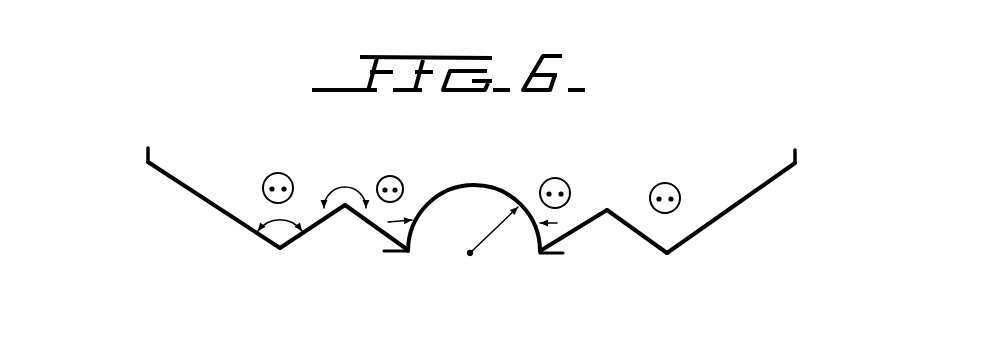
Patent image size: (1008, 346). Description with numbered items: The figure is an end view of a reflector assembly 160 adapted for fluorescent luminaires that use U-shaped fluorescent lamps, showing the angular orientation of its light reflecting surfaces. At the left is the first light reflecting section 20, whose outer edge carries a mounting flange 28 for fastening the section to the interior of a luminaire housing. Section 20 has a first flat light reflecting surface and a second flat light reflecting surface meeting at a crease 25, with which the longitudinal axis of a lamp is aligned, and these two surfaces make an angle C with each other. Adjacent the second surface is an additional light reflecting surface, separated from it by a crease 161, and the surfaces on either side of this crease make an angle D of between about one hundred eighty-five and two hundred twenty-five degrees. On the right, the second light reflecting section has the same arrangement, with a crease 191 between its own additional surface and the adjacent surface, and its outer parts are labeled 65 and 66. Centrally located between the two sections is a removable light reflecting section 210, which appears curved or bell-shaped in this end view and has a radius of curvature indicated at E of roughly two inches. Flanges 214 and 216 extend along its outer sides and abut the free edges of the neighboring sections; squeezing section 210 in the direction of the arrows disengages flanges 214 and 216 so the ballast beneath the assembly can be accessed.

The first light reflecting section 20 is at (212, 207).
The crease 25 is at (280, 248).
The mounting flange 28 is at (147, 149).
The second vertex of reflector 65 is at (667, 253).
The right end edge of reflector 66 is at (795, 163).
The reflector assembly 160 is at (723, 218).
The crease 161 is at (345, 205).
The crease 191 is at (607, 208).
The removable light reflecting section 210 is at (510, 148).
The flange 214 is at (394, 252).
The flange 216 is at (551, 257).
The angle C is at (266, 222).
The angle D is at (348, 157).
The radius of semicircular section E is at (490, 232).